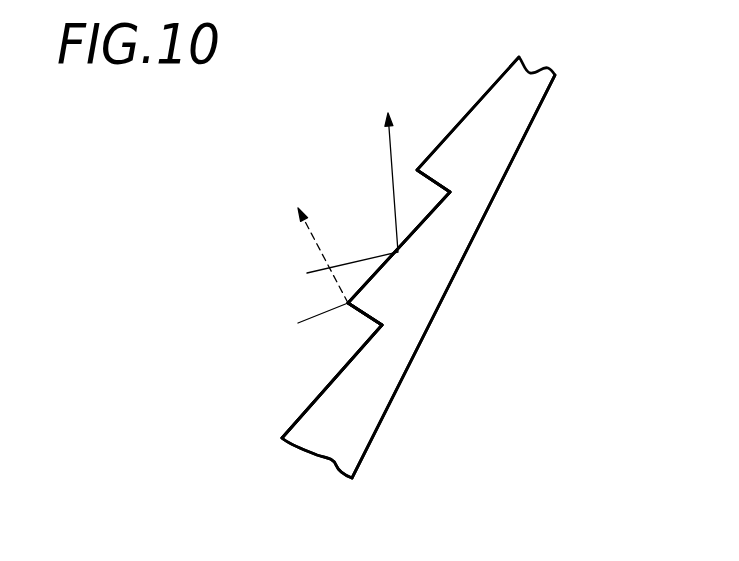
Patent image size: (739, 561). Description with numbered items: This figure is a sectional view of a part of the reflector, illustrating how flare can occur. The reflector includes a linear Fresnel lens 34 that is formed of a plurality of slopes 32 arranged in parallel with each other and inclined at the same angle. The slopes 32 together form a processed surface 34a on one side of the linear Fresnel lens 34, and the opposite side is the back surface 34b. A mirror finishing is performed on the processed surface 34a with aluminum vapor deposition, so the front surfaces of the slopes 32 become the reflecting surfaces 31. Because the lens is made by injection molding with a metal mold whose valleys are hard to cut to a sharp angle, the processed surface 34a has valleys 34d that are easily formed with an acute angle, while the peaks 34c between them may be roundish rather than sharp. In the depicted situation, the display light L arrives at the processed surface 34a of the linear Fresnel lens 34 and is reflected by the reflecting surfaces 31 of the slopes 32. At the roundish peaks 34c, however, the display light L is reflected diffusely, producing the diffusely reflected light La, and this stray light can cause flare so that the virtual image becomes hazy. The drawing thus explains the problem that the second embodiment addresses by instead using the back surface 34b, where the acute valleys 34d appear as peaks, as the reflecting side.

The reflecting surface 31 is at (348, 303).
The slope 32 is at (468, 112).
The linear Fresnel lens 34 is at (372, 420).
The processed surface 34a is at (293, 425).
The back surface 34b is at (361, 463).
The peak 34c is at (415, 170).
The valley 34d is at (450, 192).
The display light L is at (358, 270).
The diffusely reflected light La is at (317, 243).